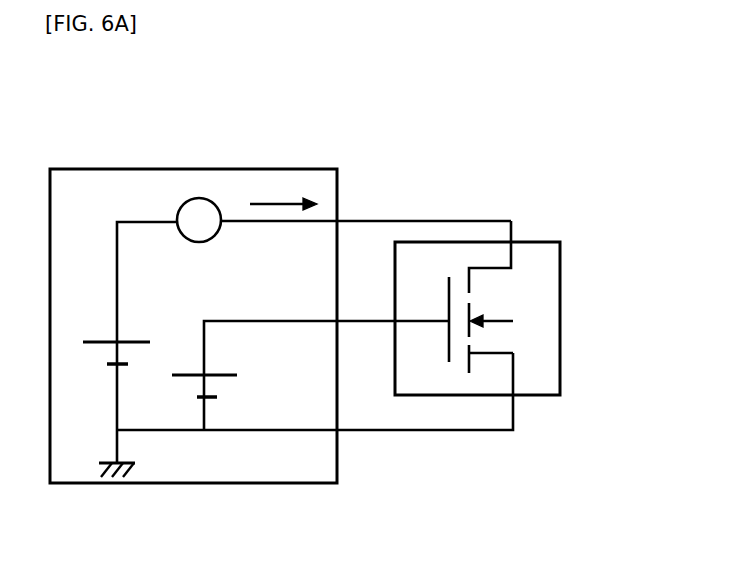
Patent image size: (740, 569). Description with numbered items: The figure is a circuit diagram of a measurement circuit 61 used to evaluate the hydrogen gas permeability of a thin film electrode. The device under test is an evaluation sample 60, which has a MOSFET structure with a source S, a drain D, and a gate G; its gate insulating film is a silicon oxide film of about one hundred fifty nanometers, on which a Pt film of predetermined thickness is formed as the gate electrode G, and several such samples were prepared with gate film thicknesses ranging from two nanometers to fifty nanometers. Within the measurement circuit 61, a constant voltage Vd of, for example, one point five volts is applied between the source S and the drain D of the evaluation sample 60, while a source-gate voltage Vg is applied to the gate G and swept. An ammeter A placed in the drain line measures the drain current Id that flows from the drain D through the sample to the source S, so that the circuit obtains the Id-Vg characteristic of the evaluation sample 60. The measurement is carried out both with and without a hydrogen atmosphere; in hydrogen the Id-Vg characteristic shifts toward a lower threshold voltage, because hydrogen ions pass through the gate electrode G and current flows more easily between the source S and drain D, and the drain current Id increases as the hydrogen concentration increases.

The evaluation sample 60 is at (515, 297).
The measurement circuit 61 is at (281, 292).
The constant voltage Vd is at (112, 337).
The source-gate voltage Vg is at (218, 371).
The drain current Id is at (273, 196).
The ammeter A is at (199, 220).
The gate G is at (435, 319).
The drain D is at (505, 257).
The source S is at (504, 364).